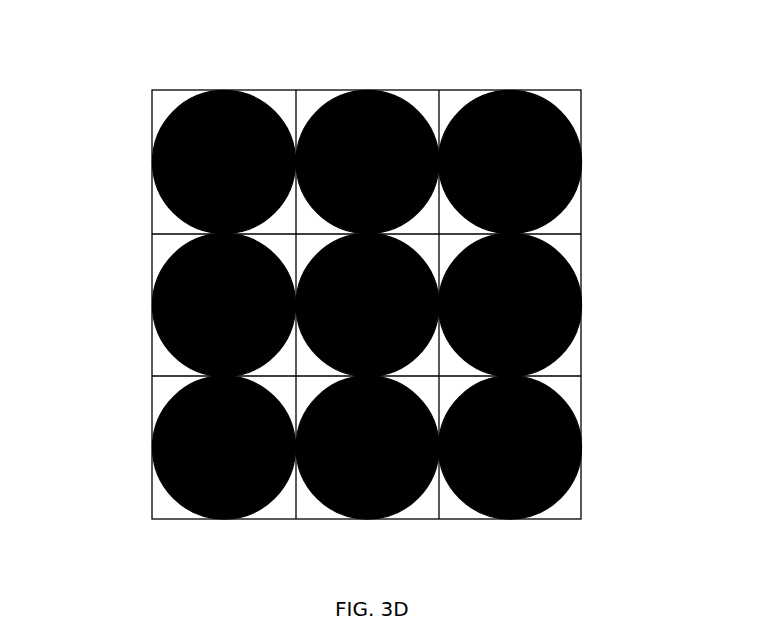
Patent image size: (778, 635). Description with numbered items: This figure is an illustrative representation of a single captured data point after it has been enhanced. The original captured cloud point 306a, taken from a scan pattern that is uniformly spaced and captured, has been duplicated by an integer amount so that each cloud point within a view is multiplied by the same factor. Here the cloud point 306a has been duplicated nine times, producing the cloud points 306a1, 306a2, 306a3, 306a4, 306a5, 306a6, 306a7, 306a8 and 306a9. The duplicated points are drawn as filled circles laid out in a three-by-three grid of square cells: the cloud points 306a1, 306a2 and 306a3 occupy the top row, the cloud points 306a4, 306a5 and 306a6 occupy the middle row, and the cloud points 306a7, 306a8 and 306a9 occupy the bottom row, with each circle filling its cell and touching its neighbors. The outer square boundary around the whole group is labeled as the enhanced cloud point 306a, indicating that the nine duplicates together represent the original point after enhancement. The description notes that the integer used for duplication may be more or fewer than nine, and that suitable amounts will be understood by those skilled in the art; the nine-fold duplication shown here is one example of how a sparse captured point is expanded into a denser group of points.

The cloud point 306a is at (626, 37).
The cloud point 306a1 is at (215, 80).
The cloud point 306a2 is at (369, 80).
The cloud point 306a3 is at (503, 80).
The cloud point 306a4 is at (143, 293).
The cloud point 306a5 is at (352, 394).
The cloud point 306a6 is at (574, 295).
The cloud point 306a7 is at (143, 445).
The cloud point 306a8 is at (412, 487).
The cloud point 306a9 is at (574, 437).